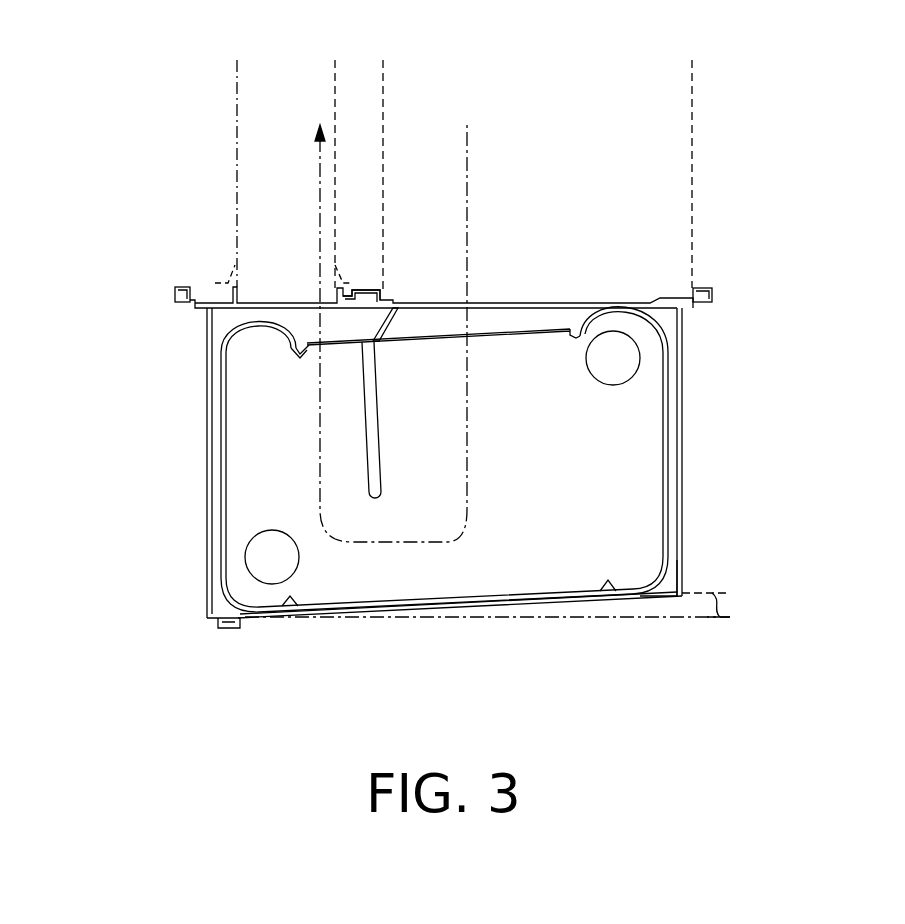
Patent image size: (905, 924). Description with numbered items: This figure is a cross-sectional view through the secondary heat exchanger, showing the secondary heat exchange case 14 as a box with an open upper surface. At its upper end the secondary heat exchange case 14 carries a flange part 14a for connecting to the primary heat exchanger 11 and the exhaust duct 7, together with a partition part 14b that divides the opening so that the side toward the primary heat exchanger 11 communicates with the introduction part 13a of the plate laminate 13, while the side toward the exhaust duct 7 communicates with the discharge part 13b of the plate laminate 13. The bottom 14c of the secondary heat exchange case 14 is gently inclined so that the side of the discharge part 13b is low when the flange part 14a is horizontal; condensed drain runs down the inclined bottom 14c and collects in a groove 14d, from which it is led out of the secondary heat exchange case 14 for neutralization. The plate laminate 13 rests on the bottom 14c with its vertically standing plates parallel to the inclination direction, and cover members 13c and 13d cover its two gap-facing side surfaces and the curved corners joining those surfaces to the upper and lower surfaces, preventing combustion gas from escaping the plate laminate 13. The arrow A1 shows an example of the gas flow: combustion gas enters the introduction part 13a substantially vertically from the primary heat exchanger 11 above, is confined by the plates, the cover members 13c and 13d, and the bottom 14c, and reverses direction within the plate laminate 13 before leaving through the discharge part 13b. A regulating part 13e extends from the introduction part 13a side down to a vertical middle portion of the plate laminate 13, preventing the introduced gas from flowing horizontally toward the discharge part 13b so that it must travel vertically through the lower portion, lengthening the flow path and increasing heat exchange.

The exhaust duct 7 is at (237, 100).
The primary heat exchanger 11 is at (692, 97).
The plate laminate 13 is at (663, 415).
The introduction part 13a is at (517, 336).
The discharge part 13b is at (313, 342).
The cover member 13c is at (667, 353).
The cover member 13d is at (235, 333).
The regulating part 13e is at (380, 468).
The secondary heat exchange case 14 is at (681, 375).
The flange part 14a is at (188, 292).
The partition part 14b is at (365, 298).
The bottom 14c is at (658, 592).
The groove 14d is at (213, 616).
The arrow A1 is at (320, 170).